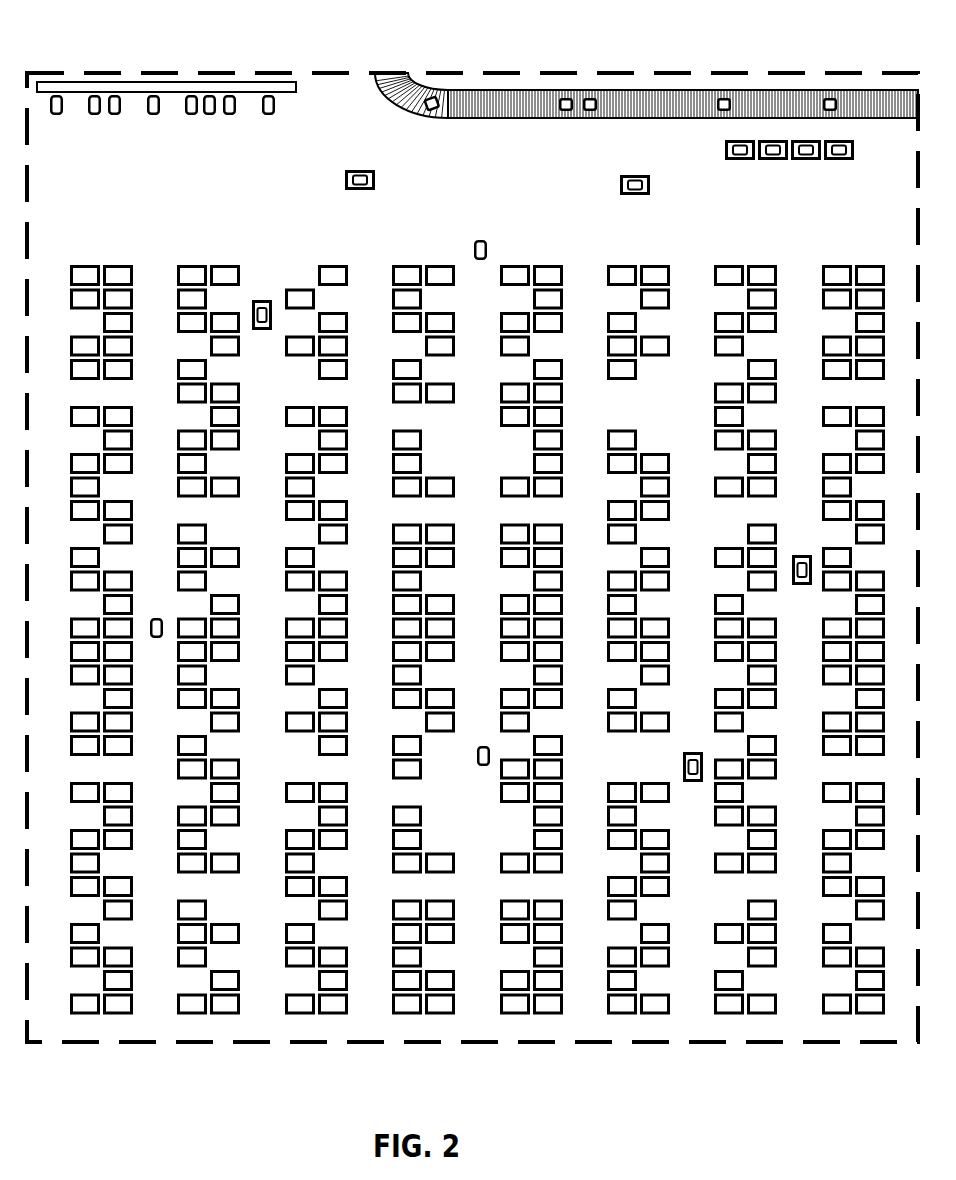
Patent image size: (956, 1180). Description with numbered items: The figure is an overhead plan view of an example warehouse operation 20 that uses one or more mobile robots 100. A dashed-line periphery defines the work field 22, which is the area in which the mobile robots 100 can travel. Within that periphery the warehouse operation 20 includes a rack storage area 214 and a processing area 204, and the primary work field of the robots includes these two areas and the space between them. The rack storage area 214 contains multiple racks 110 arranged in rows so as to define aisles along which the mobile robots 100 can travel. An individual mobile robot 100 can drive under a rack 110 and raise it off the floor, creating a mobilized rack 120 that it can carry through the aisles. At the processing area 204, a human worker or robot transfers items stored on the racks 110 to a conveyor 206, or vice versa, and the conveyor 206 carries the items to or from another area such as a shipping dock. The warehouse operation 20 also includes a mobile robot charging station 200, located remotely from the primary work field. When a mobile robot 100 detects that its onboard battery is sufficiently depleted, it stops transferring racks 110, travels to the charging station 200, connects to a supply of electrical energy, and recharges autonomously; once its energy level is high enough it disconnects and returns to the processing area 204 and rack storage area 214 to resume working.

The warehouse operation 20 is at (794, 46).
The work field 22 is at (645, 1046).
The mobile robot 100 is at (57, 115).
The rack 110 is at (120, 263).
The mobilized rack 120 is at (347, 178).
The mobile robot charging station 200 is at (316, 103).
The processing area 204 is at (690, 161).
The conveyor 206 is at (540, 121).
The rack storage area 214 is at (100, 232).